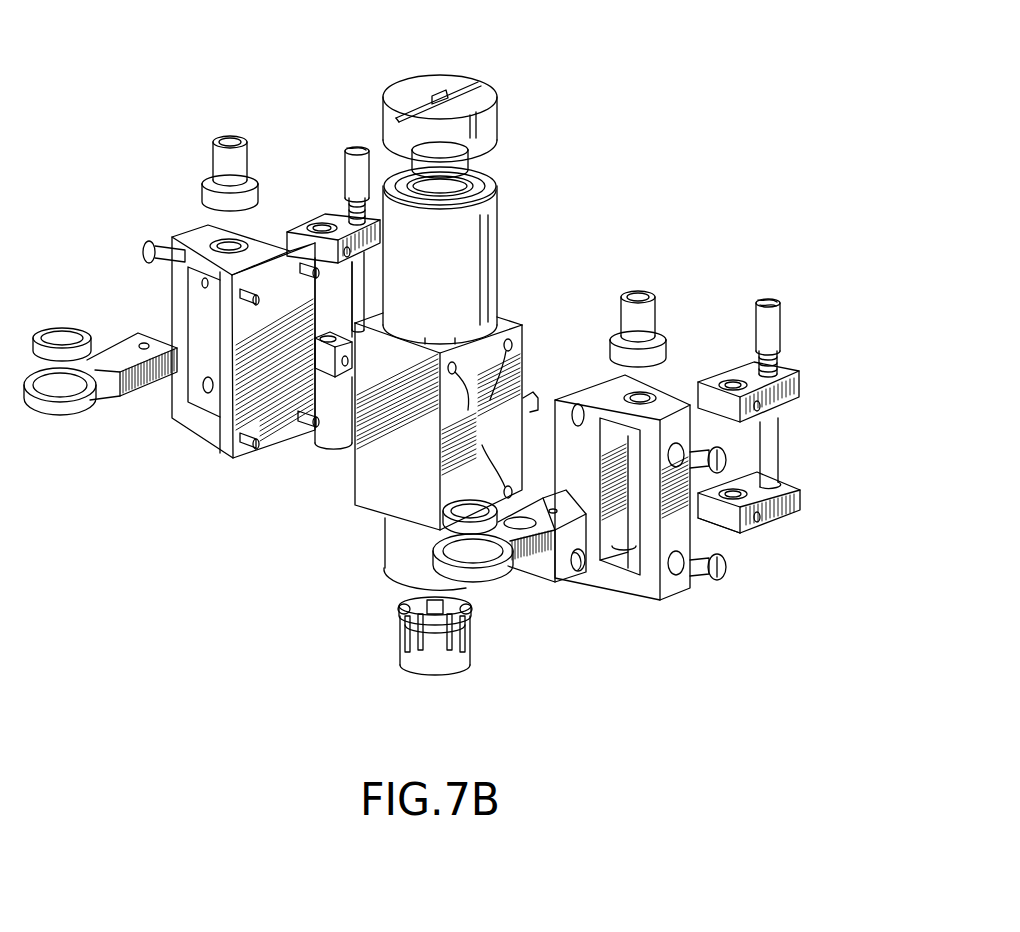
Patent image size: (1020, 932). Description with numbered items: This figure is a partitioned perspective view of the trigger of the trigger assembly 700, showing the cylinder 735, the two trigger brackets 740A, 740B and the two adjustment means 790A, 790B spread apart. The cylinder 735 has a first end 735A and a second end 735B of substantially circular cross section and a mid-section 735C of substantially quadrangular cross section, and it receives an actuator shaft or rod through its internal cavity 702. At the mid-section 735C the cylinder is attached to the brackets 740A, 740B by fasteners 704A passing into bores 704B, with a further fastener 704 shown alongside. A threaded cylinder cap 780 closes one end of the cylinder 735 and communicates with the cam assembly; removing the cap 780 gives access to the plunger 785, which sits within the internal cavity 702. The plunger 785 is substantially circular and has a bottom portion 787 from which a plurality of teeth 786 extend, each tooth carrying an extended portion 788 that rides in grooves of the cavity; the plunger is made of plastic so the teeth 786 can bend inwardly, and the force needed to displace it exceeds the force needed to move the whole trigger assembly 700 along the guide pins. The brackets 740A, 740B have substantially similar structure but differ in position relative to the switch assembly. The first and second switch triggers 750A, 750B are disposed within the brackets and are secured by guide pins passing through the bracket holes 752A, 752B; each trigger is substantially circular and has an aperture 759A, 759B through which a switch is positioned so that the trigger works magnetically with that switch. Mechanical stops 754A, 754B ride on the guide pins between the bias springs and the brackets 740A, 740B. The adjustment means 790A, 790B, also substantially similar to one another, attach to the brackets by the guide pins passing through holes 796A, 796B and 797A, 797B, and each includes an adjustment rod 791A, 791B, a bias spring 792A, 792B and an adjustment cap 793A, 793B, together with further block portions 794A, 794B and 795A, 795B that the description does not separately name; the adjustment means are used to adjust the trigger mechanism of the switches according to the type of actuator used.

The trigger assembly 700 is at (565, 70).
The threaded cylinder cap 780 is at (448, 75).
The internal cavity 702 is at (460, 182).
The cylinder 735 is at (498, 252).
The first end 735A is at (385, 570).
The second end 735B is at (498, 195).
The mid-section 735C is at (367, 498).
The fastener 704 is at (582, 575).
The fasteners 704A is at (316, 428).
The bores 704B is at (481, 418).
The trigger bracket 740A is at (688, 593).
The trigger bracket 740B is at (172, 300).
The first switch trigger 750A is at (560, 562).
The second switch trigger 750B is at (136, 385).
The hole 752A is at (625, 395).
The hole 752B is at (148, 255).
The mechanical stop 754A is at (638, 294).
The mechanical stop 754B is at (222, 135).
The aperture 759A is at (522, 566).
The aperture 759B is at (58, 392).
The plunger 785 is at (430, 675).
The teeth 786 is at (458, 606).
The bottom portion 787 is at (452, 678).
The extended portions 788 is at (405, 628).
The adjustment means 790A is at (792, 418).
The adjustment means 790B is at (313, 209).
The adjustment rod 791A is at (780, 452).
The adjustment rod 791B is at (358, 282).
The bias spring 792A is at (781, 362).
The bias spring 792B is at (350, 205).
The adjustment cap 793A is at (784, 326).
The adjustment cap 793B is at (348, 148).
The lower clamp block 794A is at (775, 506).
The lower clamp block 794B is at (357, 447).
The upper clamp block 795A is at (742, 357).
The upper clamp block 795B is at (290, 222).
The hole 796A is at (750, 535).
The hole 796B is at (352, 353).
The hole 797A is at (732, 384).
The hole 797B is at (320, 228).